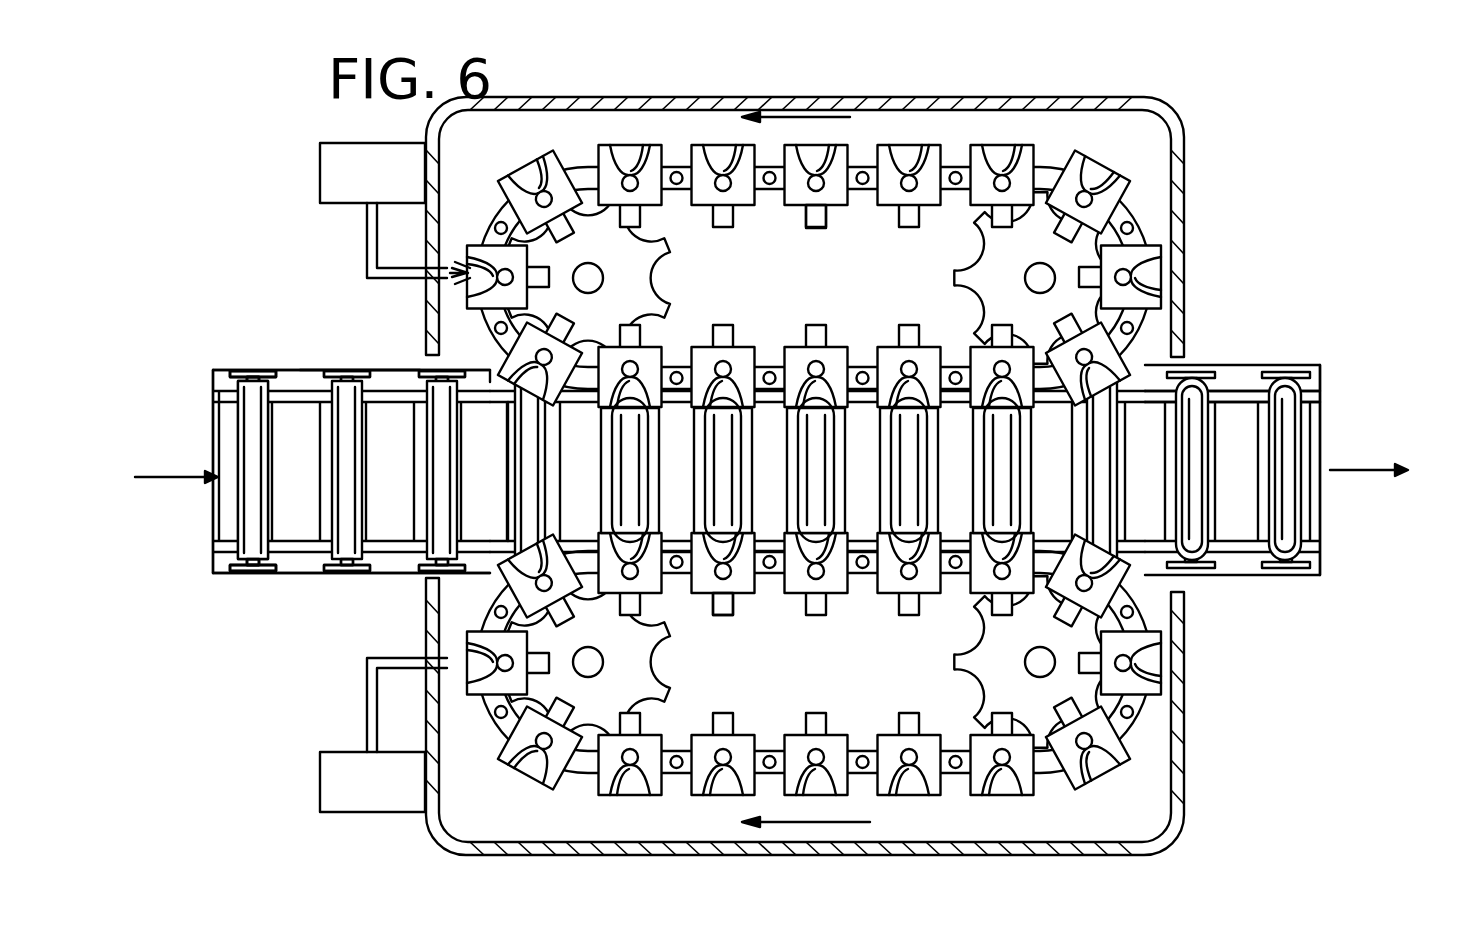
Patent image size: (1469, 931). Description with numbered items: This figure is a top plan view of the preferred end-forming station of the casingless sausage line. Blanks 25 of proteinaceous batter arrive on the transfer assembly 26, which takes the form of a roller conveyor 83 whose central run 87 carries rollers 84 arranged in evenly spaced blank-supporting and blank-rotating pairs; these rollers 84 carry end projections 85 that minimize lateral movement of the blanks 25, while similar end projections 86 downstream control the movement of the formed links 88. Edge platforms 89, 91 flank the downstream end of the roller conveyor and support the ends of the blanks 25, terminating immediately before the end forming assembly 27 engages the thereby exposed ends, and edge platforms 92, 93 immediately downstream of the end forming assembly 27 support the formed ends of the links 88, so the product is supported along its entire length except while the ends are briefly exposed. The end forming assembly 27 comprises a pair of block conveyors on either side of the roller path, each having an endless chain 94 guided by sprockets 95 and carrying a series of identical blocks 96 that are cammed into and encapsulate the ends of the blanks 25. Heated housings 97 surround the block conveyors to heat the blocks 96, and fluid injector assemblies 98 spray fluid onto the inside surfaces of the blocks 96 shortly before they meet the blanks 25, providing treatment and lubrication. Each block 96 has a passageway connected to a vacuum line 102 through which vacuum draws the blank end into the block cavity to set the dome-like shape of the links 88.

The blank 25 is at (245, 425).
The transfer assembly 26 is at (350, 352).
The end forming assembly 27 is at (1196, 116).
The roller conveyor 83 is at (310, 600).
The rollers 84 is at (278, 548).
The end projections 85 is at (356, 372).
The end projections 86 is at (1290, 380).
The central run 87 is at (215, 440).
The formed links 88 is at (1282, 410).
The edge platform 89 is at (300, 370).
The edge platform 91 is at (383, 573).
The edge platform 92 is at (1218, 365).
The edge platform 93 is at (1320, 575).
The endless chain 94 is at (580, 168).
The sprockets 95 is at (962, 262).
The block 96 is at (482, 247).
The heated housing 97 is at (818, 97).
The fluid injector assembly 98 is at (381, 186).
The vacuum line 102 is at (805, 215).